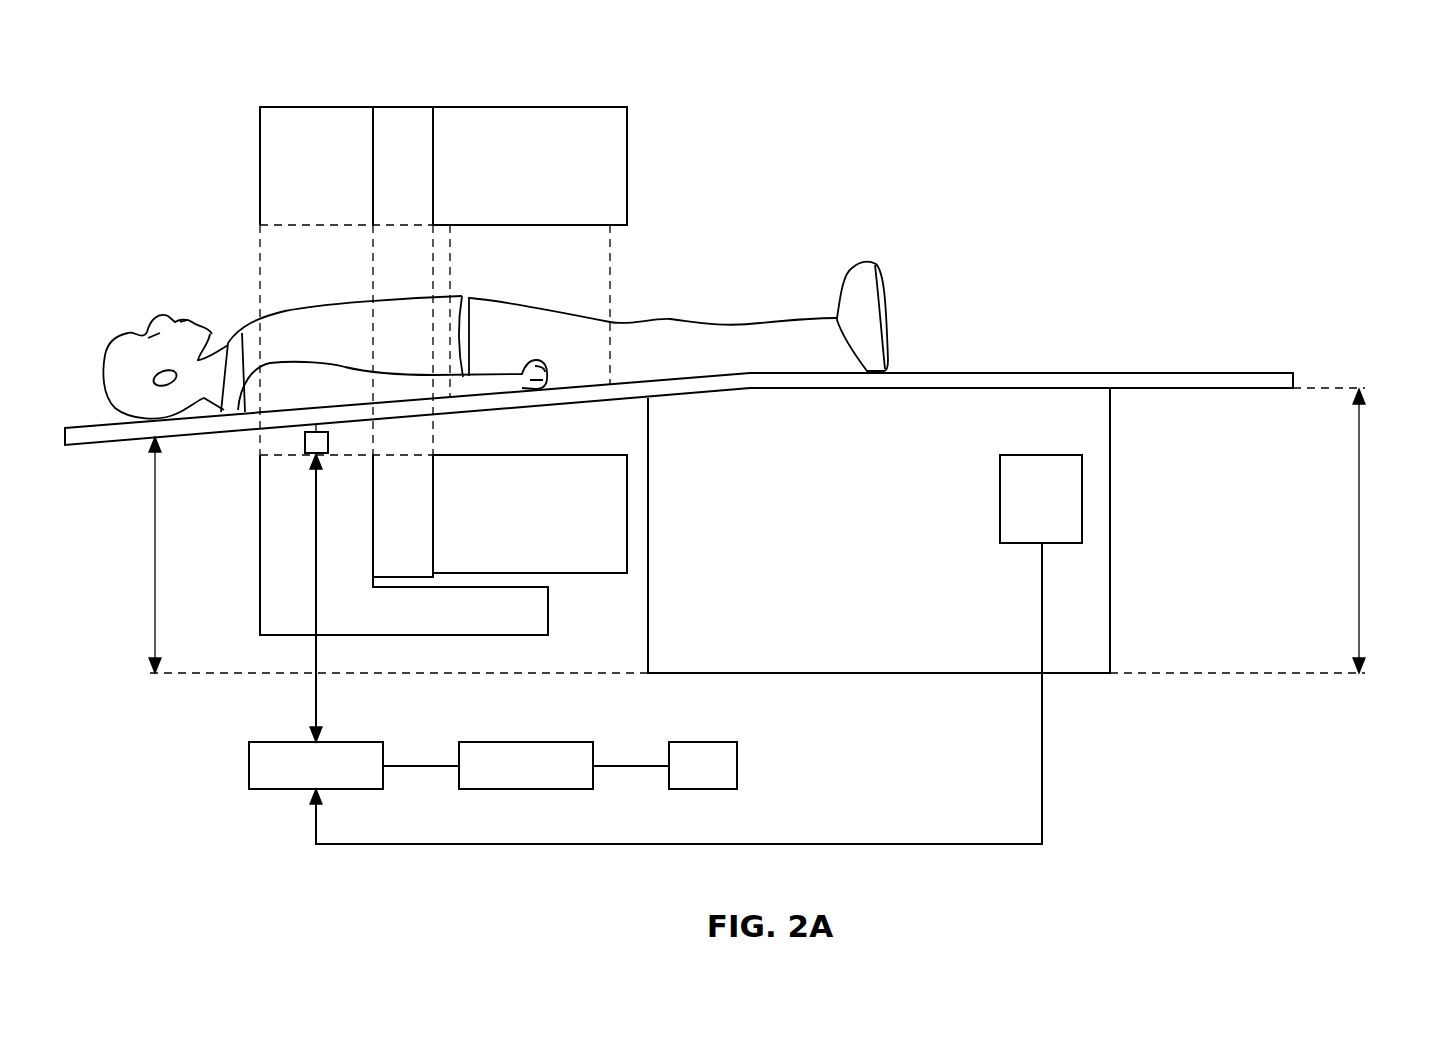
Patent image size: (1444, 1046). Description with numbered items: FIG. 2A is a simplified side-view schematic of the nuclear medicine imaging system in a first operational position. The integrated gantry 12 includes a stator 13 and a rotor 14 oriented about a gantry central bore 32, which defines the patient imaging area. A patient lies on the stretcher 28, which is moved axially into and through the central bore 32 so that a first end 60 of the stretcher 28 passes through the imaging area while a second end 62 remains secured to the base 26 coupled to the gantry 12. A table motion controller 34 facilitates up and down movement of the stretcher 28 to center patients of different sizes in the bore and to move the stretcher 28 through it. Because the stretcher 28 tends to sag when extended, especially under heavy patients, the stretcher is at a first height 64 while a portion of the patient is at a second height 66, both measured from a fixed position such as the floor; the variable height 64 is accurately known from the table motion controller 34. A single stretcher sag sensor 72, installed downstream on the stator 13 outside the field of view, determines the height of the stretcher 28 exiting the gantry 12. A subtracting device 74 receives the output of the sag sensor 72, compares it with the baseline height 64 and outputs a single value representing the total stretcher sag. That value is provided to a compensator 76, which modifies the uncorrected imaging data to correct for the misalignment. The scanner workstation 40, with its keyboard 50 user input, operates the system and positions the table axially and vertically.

The gantry 12 is at (568, 107).
The stator 13 is at (273, 252).
The rotor 14 is at (420, 256).
The base 26 is at (783, 505).
The stretcher 28 is at (1018, 380).
The gantry central bore 32 is at (572, 262).
The table motion controller 34 is at (1040, 455).
The scanner workstation 40 is at (704, 742).
The keyboard 50 is at (433, 440).
The first end of the stretcher 60 is at (109, 445).
The second end of the stretcher 62 is at (1295, 378).
The first height 64 is at (1360, 530).
The second height 66 is at (153, 550).
The stretcher sag sensor 72 is at (300, 443).
The subtracting device 74 is at (282, 742).
The compensator 76 is at (520, 742).